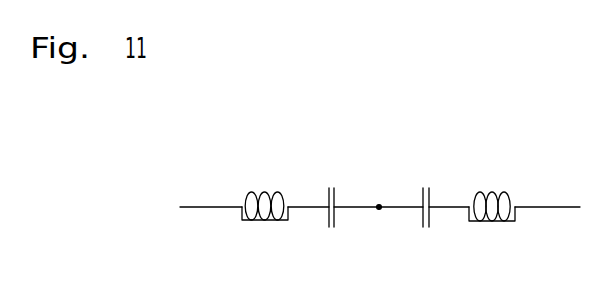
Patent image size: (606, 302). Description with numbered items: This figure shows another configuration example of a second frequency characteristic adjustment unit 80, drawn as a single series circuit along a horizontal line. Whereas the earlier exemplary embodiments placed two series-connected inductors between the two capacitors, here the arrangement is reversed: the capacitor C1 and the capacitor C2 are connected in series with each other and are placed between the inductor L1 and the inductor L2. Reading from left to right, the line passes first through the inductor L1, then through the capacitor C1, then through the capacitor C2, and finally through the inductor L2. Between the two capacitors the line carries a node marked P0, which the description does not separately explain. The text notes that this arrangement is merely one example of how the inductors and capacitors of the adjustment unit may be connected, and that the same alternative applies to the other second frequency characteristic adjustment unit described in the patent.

The second frequency characteristic adjustment unit 80 is at (378, 96).
The inductor L1 is at (265, 188).
The capacitor C1 is at (330, 192).
The connection point P0 is at (379, 212).
The capacitor C2 is at (425, 192).
The inductor L2 is at (492, 189).